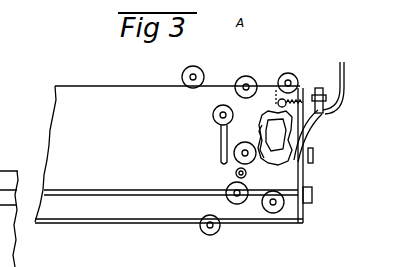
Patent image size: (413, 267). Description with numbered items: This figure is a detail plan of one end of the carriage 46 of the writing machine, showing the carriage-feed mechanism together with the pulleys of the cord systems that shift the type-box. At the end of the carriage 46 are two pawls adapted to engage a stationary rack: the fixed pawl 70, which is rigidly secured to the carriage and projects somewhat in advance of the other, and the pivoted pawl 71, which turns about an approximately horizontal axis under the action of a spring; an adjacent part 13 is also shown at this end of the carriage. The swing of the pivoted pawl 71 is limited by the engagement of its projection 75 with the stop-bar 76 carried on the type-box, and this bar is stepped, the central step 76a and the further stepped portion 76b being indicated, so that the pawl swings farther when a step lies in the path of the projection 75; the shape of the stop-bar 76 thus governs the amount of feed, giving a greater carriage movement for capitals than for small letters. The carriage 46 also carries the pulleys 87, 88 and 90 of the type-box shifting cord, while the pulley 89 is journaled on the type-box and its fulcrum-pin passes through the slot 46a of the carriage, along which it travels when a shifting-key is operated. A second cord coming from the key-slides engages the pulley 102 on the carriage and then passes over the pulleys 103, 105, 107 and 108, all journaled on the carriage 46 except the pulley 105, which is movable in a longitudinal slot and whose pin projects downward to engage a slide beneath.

The bracket 13 is at (303, 112).
The carriage 46 is at (169, 154).
The slot of the carriage 46a is at (221, 152).
The fixed pawl 70 is at (345, 80).
The pivoted pawl 71 is at (306, 132).
The projection 75 is at (297, 158).
The stop-bar 76 is at (273, 156).
The central step 76a is at (268, 128).
The cam track 76b is at (97, 192).
The pulley 87 is at (182, 77).
The pulley 88 is at (201, 229).
The pulley 89 is at (212, 115).
The pulley 90 is at (236, 174).
The pulley 102 is at (246, 87).
The pulley 103 is at (234, 159).
The movable pulley 105 is at (227, 197).
The pulley 107 is at (278, 193).
The pulley 108 is at (297, 71).